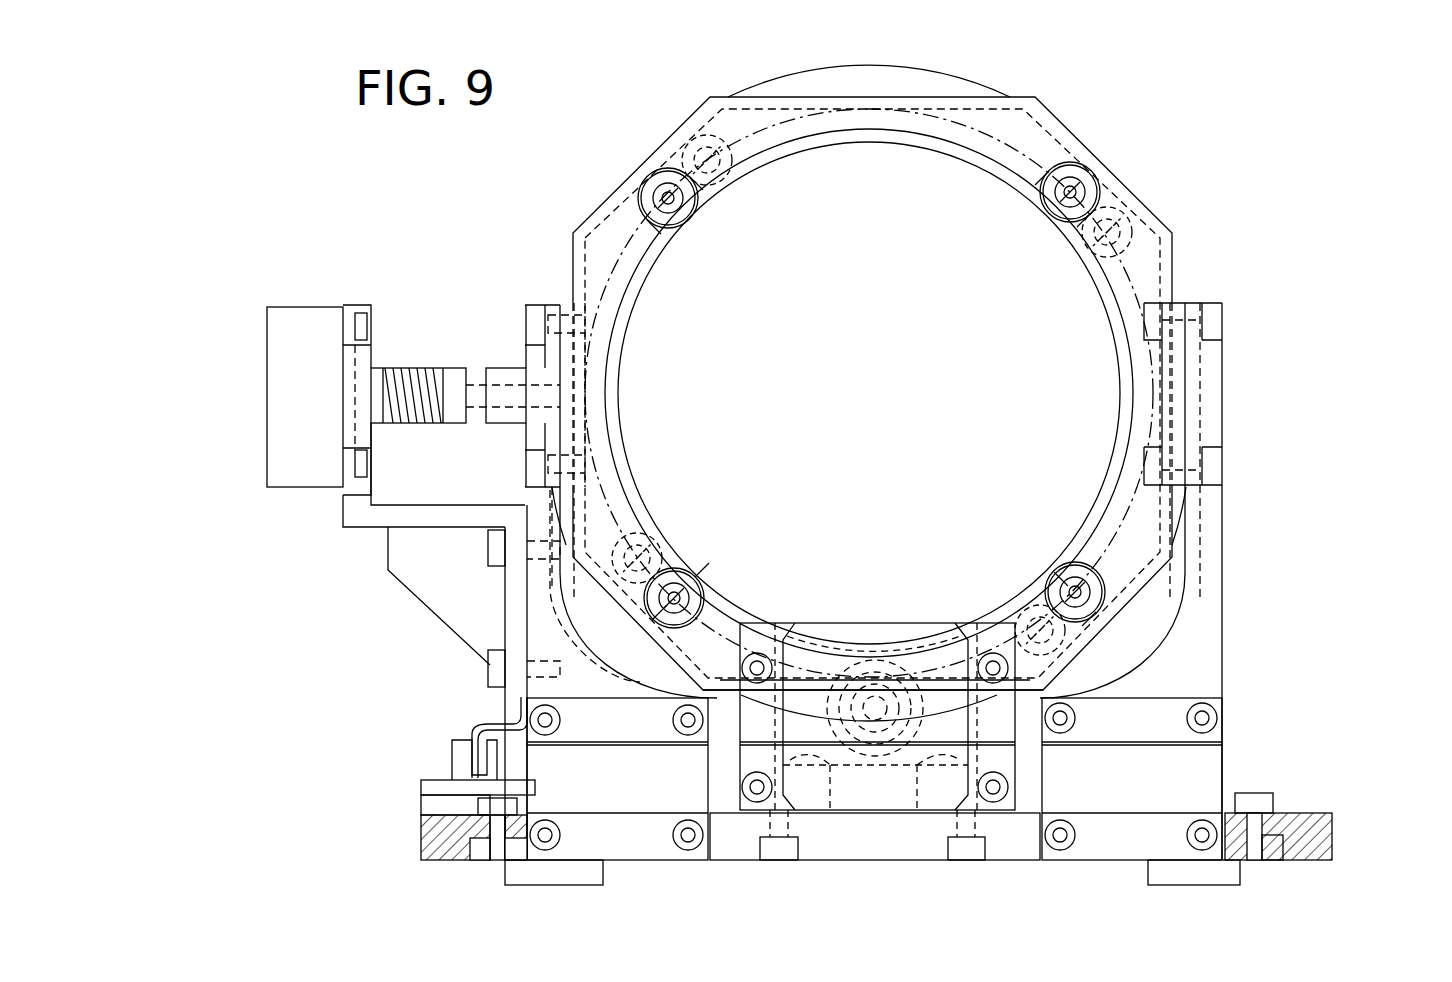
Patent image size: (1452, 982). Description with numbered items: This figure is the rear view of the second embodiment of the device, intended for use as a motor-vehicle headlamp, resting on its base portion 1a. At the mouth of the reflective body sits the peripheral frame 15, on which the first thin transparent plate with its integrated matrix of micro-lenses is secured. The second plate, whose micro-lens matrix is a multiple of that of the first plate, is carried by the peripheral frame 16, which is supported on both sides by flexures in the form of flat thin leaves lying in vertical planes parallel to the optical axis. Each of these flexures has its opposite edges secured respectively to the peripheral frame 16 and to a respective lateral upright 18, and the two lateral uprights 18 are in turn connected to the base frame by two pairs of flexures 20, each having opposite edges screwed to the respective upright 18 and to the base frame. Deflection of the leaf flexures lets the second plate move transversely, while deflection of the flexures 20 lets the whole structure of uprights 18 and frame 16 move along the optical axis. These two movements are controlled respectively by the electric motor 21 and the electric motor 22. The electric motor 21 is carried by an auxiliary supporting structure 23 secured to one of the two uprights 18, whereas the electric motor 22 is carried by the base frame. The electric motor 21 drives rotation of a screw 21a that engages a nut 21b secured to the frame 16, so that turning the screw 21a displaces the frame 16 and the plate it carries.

The base 1a is at (1332, 826).
The peripheral frame 15 is at (1170, 255).
The peripheral frame 16 is at (935, 92).
The lateral upright 18 is at (540, 636).
The flexures 20 is at (640, 786).
The electric motor 21 is at (290, 357).
The screw 21a is at (443, 385).
The nut 21b is at (510, 375).
The electric motor 22 is at (855, 795).
The auxiliary supporting structure 23 is at (437, 594).